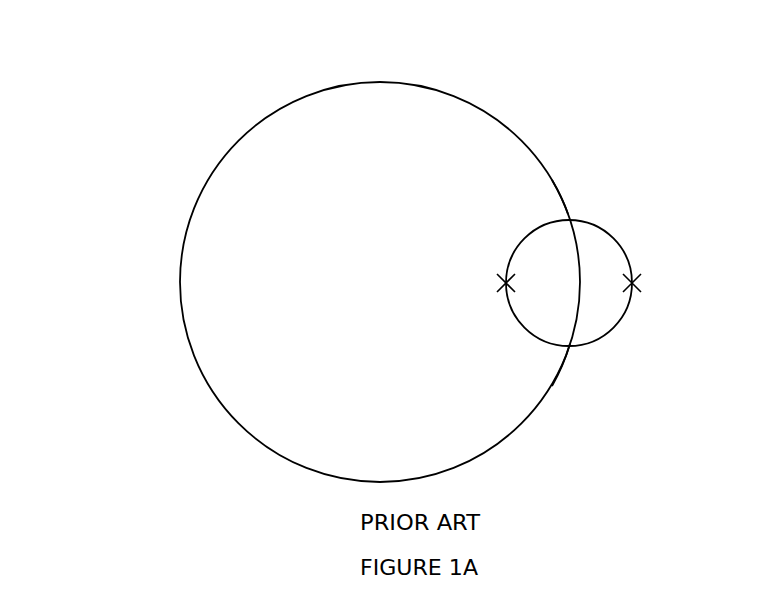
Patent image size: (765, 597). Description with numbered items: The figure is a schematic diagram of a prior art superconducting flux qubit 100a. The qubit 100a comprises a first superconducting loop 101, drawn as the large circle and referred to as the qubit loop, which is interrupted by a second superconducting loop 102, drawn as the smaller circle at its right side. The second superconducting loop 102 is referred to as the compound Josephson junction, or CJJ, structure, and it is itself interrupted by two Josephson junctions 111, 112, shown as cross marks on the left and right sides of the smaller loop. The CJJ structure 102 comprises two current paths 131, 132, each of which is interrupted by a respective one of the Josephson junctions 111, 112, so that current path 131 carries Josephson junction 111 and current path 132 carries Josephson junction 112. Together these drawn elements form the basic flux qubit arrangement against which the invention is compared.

The superconducting flux qubit 100a is at (146, 48).
The first superconducting loop 101 is at (180, 283).
The second superconducting loop 102 is at (605, 228).
The Josephson junction 111 is at (490, 278).
The Josephson junction 112 is at (648, 283).
The current path 131 is at (527, 233).
The current path 132 is at (600, 338).